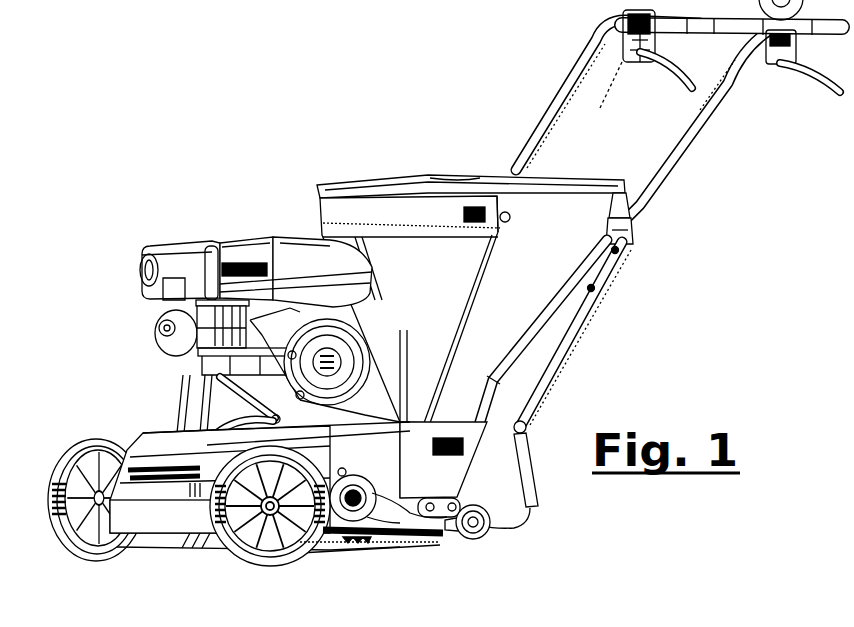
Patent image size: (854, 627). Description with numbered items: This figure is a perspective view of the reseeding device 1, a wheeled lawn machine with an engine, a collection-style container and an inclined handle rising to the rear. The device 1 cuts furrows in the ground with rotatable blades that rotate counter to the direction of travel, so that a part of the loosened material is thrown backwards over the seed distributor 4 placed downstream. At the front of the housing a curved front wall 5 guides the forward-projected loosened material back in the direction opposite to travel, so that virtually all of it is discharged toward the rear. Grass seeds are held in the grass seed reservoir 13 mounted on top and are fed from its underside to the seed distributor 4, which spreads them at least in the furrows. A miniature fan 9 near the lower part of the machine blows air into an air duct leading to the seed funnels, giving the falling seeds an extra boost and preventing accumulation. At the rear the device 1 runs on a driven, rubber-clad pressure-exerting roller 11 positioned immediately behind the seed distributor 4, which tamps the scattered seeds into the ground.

The reseeding device 1 is at (435, 294).
The seed distributor 4 is at (440, 536).
The curved front wall 5 is at (177, 450).
The miniature fan 9 is at (366, 516).
The pressure-exerting roller 11 is at (433, 548).
The grass seed reservoir 13 is at (527, 310).